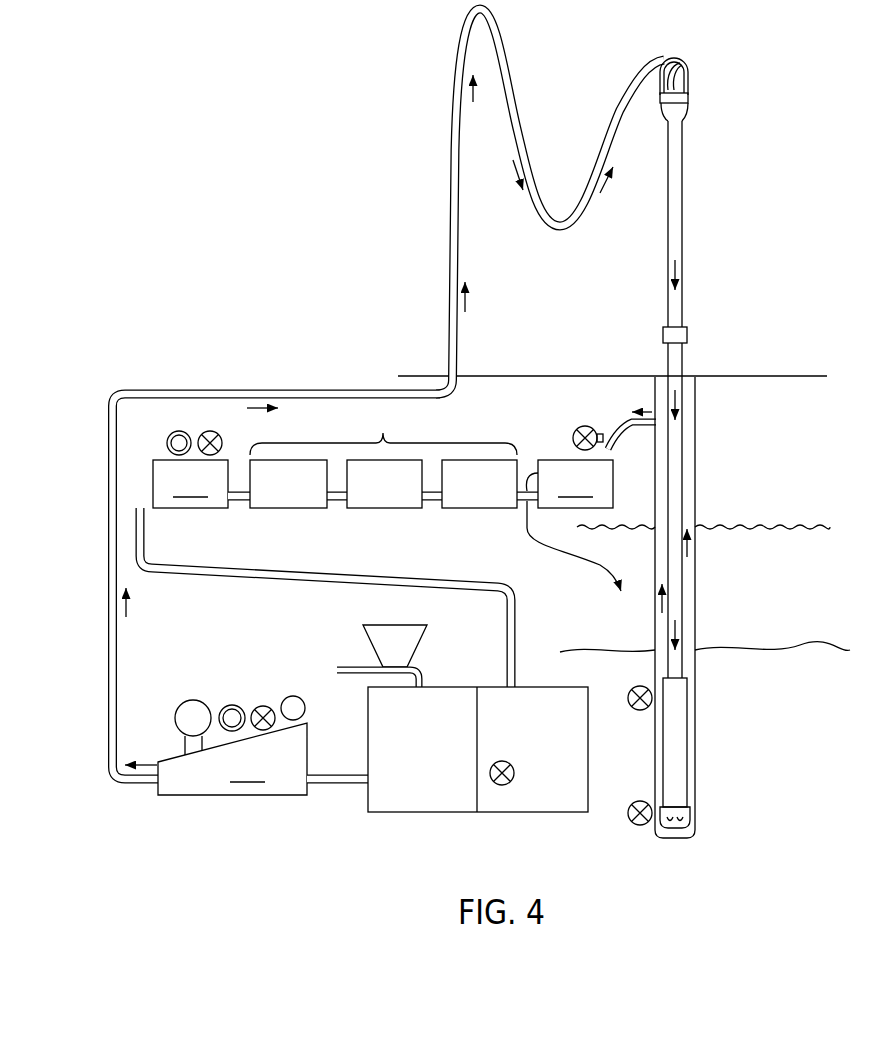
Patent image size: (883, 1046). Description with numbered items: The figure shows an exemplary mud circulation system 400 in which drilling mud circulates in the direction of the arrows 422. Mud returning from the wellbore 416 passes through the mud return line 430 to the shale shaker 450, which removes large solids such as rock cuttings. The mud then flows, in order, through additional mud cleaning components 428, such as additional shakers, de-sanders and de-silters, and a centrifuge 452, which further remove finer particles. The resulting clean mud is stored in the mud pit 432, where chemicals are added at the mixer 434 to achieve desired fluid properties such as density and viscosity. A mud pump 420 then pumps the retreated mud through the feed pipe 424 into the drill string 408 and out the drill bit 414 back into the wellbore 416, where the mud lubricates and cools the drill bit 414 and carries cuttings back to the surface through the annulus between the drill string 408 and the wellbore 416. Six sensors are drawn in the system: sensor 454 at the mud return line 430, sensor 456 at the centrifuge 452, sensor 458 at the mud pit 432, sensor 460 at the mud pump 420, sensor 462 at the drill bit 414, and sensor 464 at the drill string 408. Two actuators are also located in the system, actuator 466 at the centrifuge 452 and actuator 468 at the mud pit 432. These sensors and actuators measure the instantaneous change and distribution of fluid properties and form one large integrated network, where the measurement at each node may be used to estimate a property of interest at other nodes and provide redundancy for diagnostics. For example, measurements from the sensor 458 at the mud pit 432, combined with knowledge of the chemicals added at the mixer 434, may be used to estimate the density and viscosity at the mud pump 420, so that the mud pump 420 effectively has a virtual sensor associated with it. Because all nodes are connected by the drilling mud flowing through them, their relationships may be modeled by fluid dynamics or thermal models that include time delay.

The mud circulation system 400 is at (142, 50).
The drill string 408 is at (683, 481).
The drill bit 414 is at (696, 805).
The wellbore 416 is at (696, 449).
The mud pump 420 is at (232, 747).
The arrows 422 is at (468, 302).
The feed pipe 424 is at (178, 390).
The additional mud cleaning components 428 is at (383, 458).
The mud return line 430 is at (656, 429).
The mud pit 432 is at (482, 828).
The mixer 434 is at (417, 645).
The shale shaker 450 is at (575, 484).
The centrifuge 452 is at (190, 484).
The sensor 454 is at (573, 433).
The sensor 456 is at (212, 431).
The sensor 458 is at (509, 784).
The sensor 460 is at (263, 706).
The sensor 462 is at (629, 822).
The sensor 464 is at (640, 712).
The actuator 466 is at (167, 443).
The actuator 468 is at (234, 705).